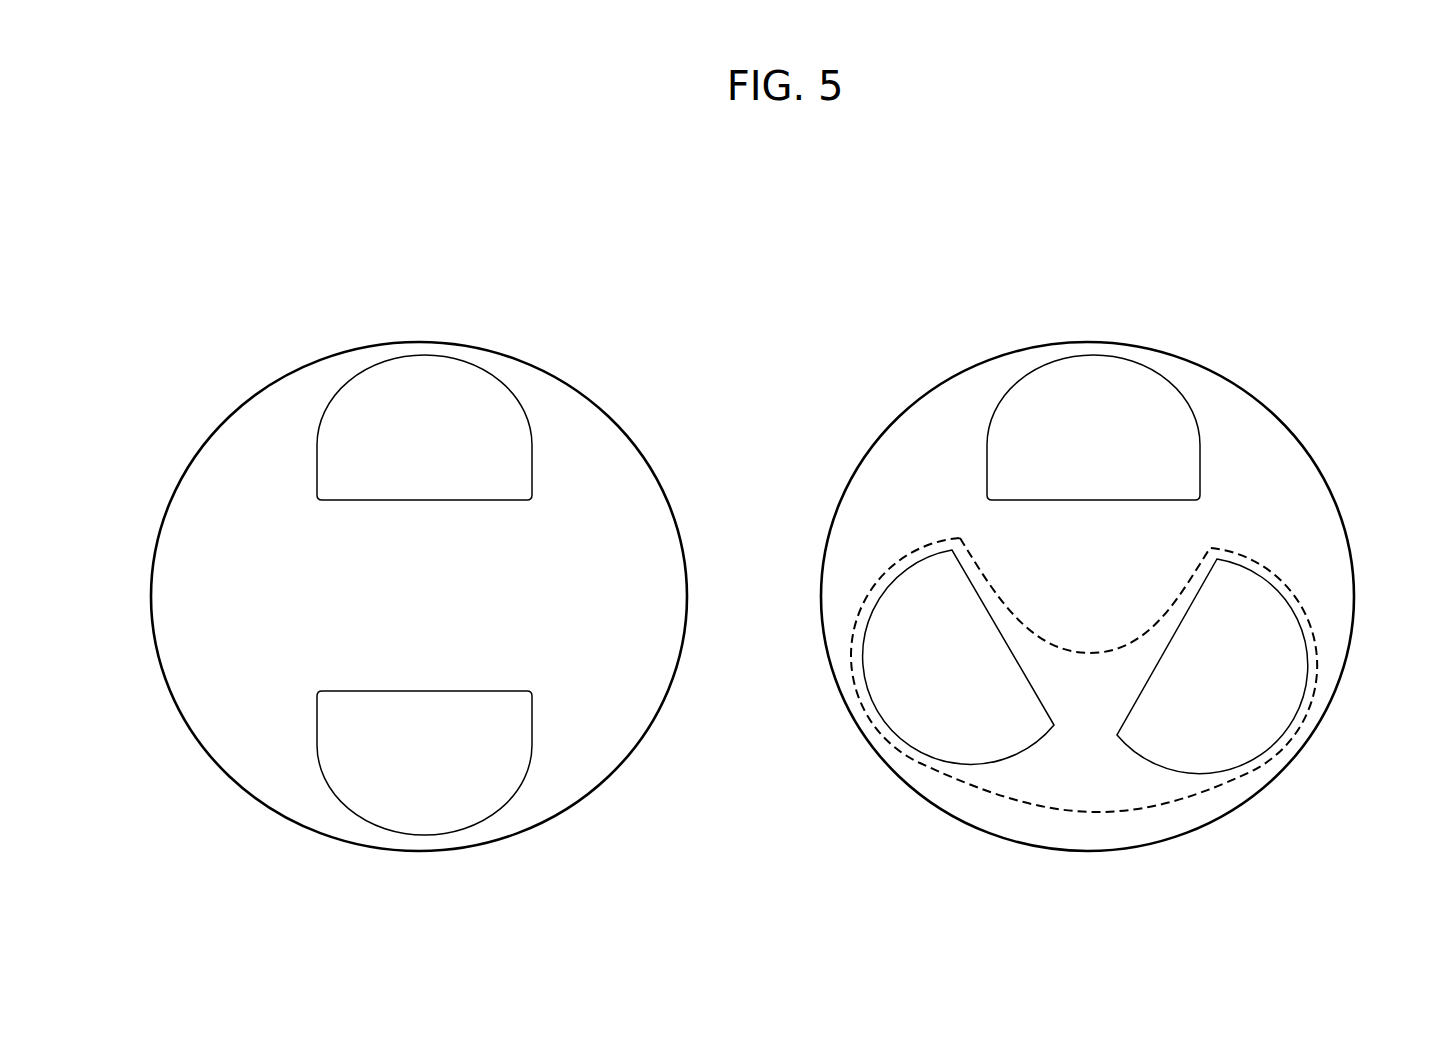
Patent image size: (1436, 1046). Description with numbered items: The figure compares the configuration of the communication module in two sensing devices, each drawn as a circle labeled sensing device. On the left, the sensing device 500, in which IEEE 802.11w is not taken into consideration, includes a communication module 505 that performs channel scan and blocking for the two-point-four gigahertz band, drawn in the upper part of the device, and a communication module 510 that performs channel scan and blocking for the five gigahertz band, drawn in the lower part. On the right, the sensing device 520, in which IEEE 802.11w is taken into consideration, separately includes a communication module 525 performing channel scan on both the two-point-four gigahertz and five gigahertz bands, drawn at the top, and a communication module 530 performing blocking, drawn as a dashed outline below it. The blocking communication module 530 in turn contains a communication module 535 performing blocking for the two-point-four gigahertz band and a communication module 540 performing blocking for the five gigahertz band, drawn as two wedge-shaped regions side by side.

The sensing device 500 is at (420, 341).
The communication module 505 is at (532, 457).
The communication module 510 is at (533, 720).
The sensing device 520 is at (1088, 341).
The communication module 525 is at (1200, 430).
The communication module 530 is at (1300, 578).
The communication module 535 is at (858, 648).
The communication module 540 is at (1307, 650).